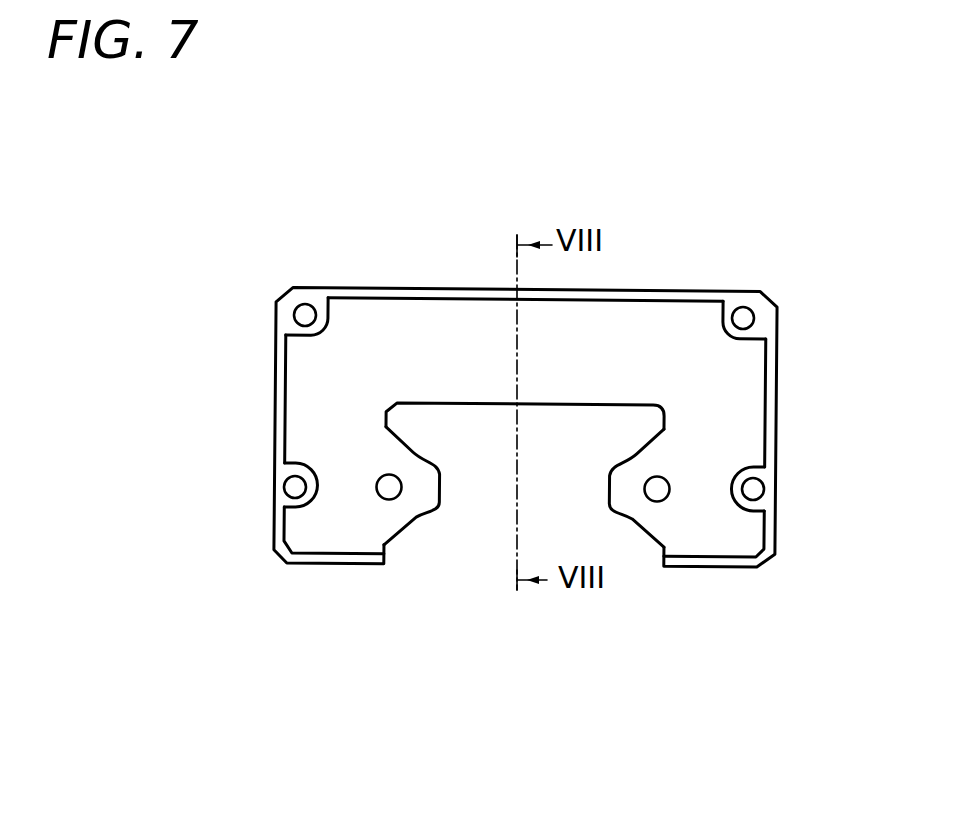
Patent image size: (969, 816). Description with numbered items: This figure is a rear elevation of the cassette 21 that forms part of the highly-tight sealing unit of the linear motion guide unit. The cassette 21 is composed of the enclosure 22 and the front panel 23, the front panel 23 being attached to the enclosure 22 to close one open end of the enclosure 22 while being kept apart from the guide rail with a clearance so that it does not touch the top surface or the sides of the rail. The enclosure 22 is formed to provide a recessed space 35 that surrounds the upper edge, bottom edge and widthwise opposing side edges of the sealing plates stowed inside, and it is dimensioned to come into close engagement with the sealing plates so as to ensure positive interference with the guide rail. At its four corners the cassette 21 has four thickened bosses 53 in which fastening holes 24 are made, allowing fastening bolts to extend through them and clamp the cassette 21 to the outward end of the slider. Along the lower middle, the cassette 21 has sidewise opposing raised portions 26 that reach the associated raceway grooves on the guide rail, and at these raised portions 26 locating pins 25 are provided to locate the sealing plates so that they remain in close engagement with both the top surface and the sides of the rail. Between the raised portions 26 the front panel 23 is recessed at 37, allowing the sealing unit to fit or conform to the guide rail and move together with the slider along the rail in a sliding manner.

The cassette 21 is at (633, 289).
The enclosure 22 is at (458, 288).
The front panel 23 is at (645, 353).
The fastening holes 24 is at (305, 306).
The locating pins 25 is at (393, 497).
The raised portions 26 is at (433, 490).
The recessed space 35 is at (392, 328).
The recess 37 is at (487, 405).
The thickened bosses 53 is at (289, 322).